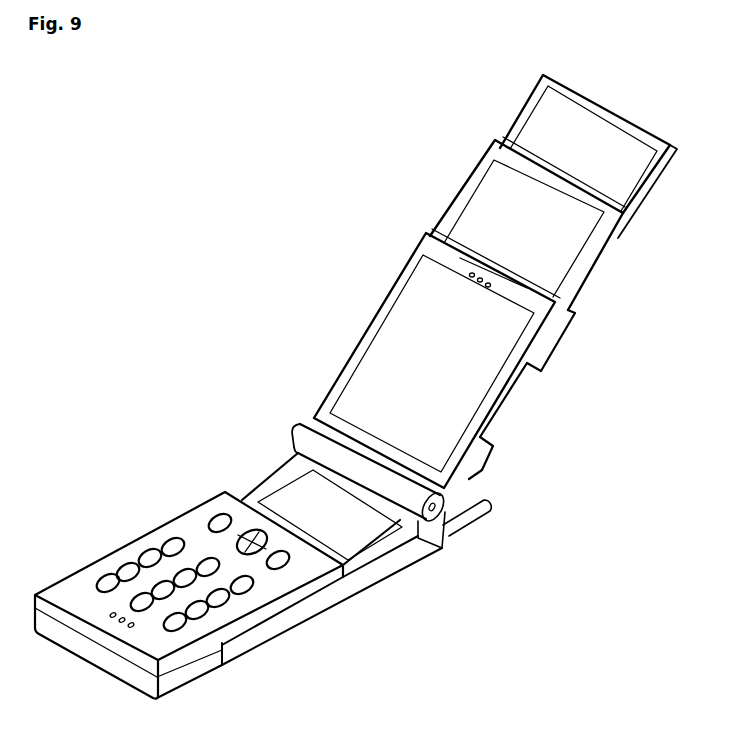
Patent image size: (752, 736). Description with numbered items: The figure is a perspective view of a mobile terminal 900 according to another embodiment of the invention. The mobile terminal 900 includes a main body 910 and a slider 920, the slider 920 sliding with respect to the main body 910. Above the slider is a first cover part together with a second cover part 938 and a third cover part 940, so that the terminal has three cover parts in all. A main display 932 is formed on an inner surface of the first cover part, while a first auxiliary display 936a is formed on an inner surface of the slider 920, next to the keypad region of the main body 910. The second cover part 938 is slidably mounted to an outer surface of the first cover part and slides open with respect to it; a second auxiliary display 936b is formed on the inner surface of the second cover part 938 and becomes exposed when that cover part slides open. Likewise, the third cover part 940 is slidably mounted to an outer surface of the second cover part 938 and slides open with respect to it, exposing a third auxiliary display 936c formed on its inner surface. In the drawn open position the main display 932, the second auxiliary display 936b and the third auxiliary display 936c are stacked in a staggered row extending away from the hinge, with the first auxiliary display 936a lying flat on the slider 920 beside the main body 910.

The mobile terminal 900 is at (279, 189).
The main body 910 is at (155, 540).
The slider 920 is at (377, 572).
The main display 932 is at (388, 330).
The first auxiliary display 936a is at (298, 502).
The second auxiliary display 936b is at (478, 203).
The third auxiliary display 936c is at (535, 118).
The second cover part 938 is at (552, 343).
The third cover part 940 is at (630, 218).